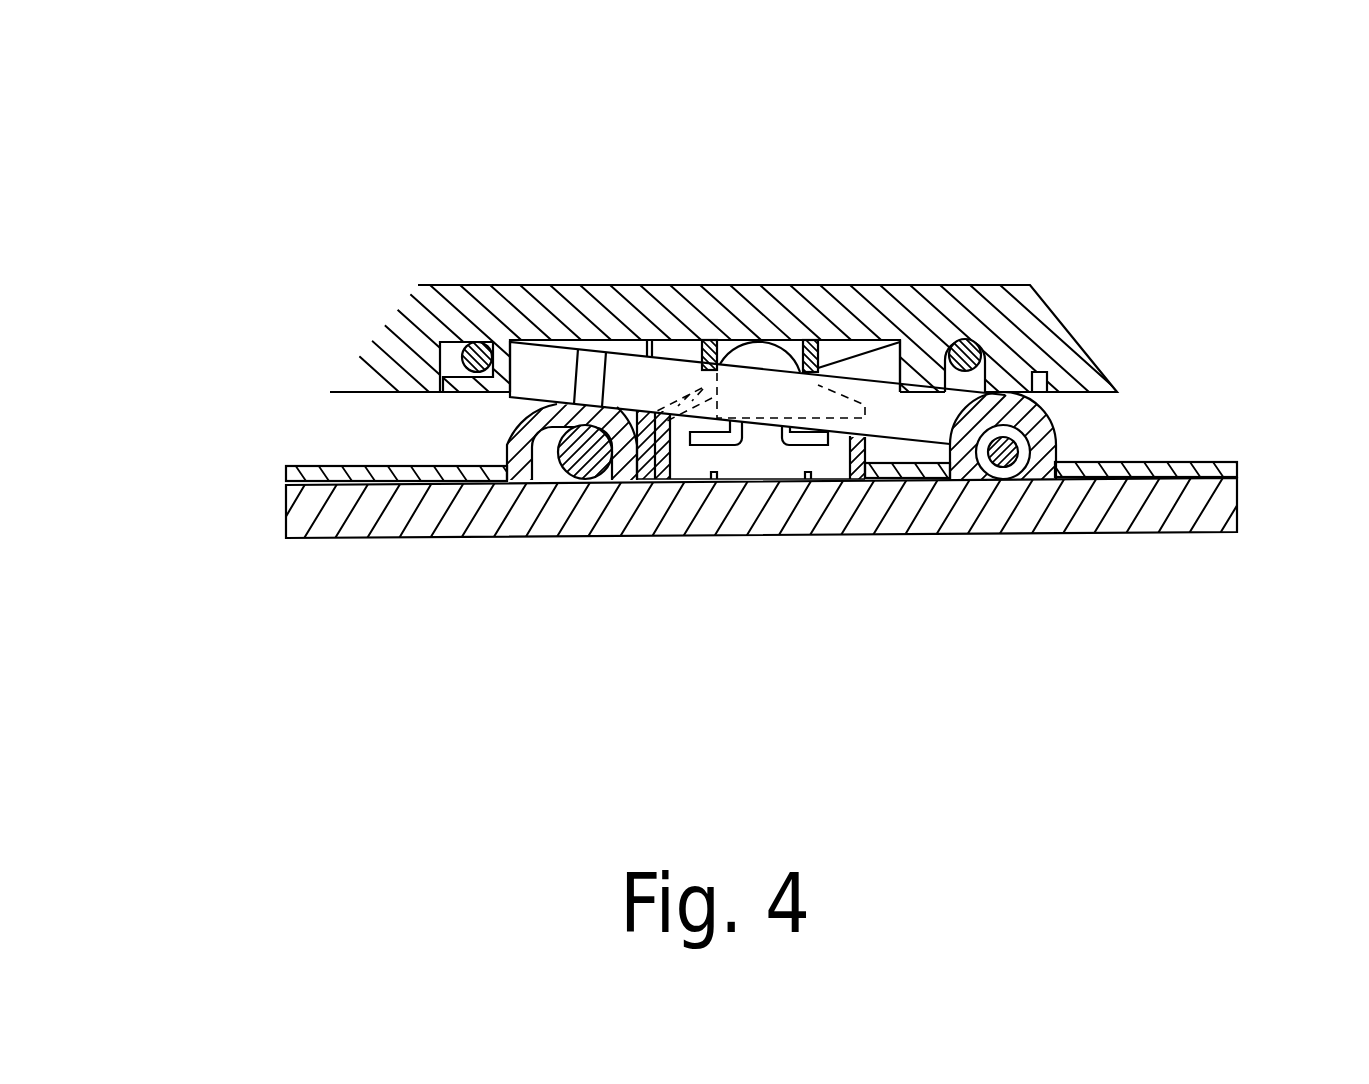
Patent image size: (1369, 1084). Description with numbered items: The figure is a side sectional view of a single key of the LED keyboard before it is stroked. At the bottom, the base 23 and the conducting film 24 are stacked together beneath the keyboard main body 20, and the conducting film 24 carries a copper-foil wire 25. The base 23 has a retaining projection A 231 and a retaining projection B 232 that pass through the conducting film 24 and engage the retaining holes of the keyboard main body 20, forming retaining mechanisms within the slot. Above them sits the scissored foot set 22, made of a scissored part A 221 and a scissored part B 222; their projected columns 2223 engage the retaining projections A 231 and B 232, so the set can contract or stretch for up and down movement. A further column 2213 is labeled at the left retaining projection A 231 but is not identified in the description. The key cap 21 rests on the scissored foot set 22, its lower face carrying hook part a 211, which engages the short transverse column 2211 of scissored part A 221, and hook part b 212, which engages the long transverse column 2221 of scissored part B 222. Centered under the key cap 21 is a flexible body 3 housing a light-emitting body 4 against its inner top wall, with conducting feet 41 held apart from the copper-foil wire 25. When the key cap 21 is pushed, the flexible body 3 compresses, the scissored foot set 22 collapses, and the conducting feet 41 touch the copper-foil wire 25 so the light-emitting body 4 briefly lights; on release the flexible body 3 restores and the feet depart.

The flexible body 3 is at (812, 350).
The light-emitting body 4 is at (759, 352).
The conducting feet 41 is at (717, 438).
The keyboard main body 20 is at (320, 484).
The key cap 21 is at (352, 360).
The hook part a 211 is at (1035, 372).
The hook part b 212 is at (438, 360).
The scissored foot set 22 is at (652, 355).
The scissored part A 221 is at (880, 372).
The short transverse column 2211 is at (980, 343).
The pivot pin 2213 is at (610, 483).
The scissored part B 222 is at (550, 370).
The long transverse column 2221 is at (470, 340).
The projected columns 2223 is at (1020, 470).
The base 23 is at (1182, 508).
The retaining projections A 231 is at (507, 443).
The retaining projections B 232 is at (1055, 440).
The conducting film 24 is at (387, 481).
The copper-foil wire 25 is at (807, 475).